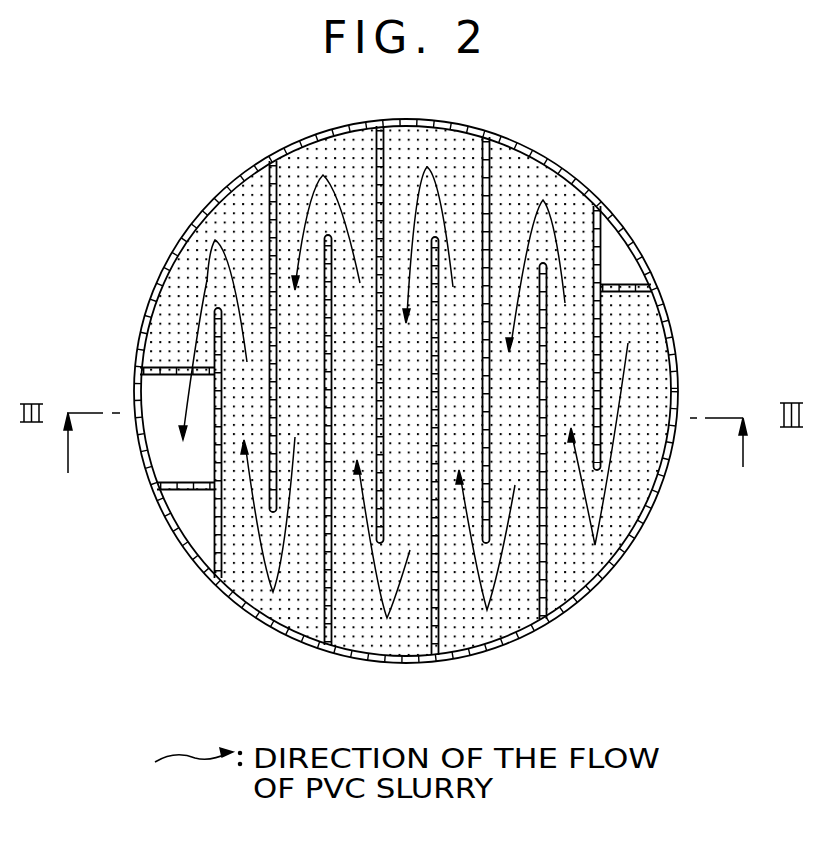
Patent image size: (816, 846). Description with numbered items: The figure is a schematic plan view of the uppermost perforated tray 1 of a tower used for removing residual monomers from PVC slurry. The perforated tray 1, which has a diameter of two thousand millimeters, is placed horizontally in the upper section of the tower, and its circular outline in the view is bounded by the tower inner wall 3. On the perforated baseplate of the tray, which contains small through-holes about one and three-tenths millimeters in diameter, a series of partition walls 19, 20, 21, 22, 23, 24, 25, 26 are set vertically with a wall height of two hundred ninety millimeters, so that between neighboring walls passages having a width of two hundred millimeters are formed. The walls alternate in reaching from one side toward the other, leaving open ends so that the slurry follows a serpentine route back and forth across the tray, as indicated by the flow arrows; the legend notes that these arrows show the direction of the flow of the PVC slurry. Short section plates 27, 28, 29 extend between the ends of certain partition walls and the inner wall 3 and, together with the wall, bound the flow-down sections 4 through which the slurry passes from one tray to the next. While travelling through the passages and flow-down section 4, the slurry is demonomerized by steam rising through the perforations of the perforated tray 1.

The perforated tray 1 is at (508, 192).
The vessel wall 3 is at (582, 182).
The flow-down section 4 is at (180, 470).
The partition wall 19 is at (236, 590).
The partition wall 20 is at (283, 605).
The partition wall 21 is at (337, 638).
The partition wall 22 is at (410, 590).
The partition wall 23 is at (440, 615).
The partition wall 24 is at (503, 630).
The partition wall 25 is at (560, 582).
The partition wall 26 is at (612, 520).
The section plate 27 is at (613, 283).
The section plate 28 is at (188, 495).
The section plate 29 is at (163, 367).